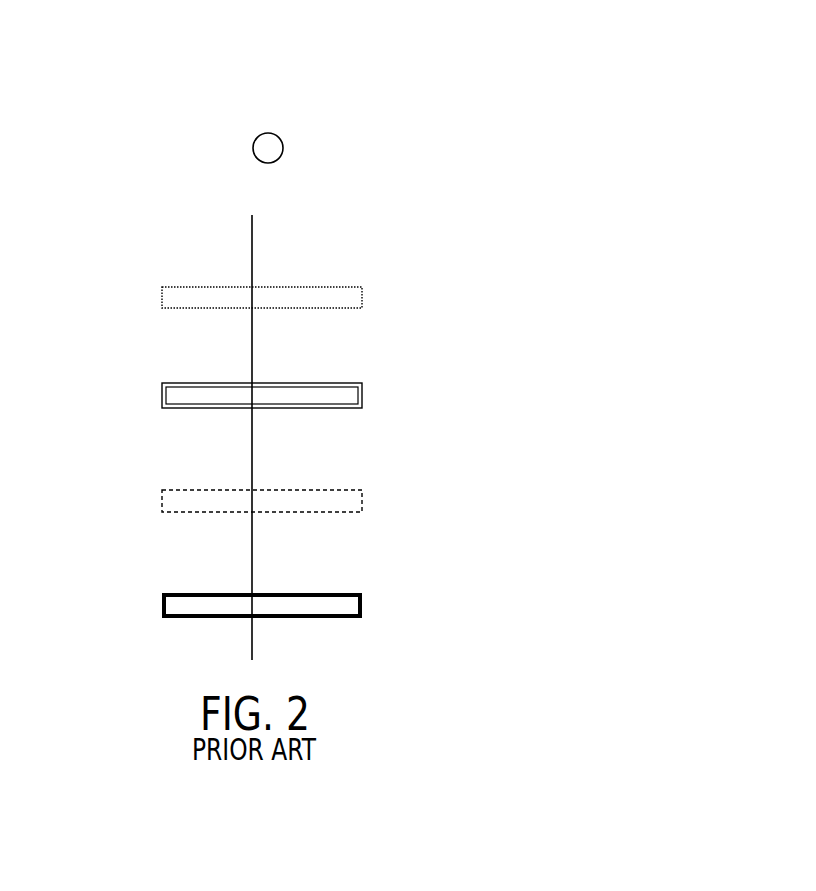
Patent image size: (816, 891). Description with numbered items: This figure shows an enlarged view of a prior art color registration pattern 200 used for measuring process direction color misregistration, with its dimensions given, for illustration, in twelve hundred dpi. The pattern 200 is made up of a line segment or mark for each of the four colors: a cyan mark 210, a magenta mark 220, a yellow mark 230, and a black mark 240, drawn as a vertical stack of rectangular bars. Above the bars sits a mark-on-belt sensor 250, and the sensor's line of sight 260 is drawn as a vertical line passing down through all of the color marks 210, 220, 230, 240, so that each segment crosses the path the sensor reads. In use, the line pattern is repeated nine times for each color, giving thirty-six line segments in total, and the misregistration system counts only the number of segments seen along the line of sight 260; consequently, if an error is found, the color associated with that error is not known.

The pattern 200 is at (404, 86).
The cyan mark 210 is at (170, 298).
The magenta mark 220 is at (170, 396).
The yellow mark 230 is at (170, 501).
The black mark 240 is at (170, 606).
The mark-on-belt (MOB) sensor 250 is at (243, 146).
The line of sight 260 is at (262, 461).